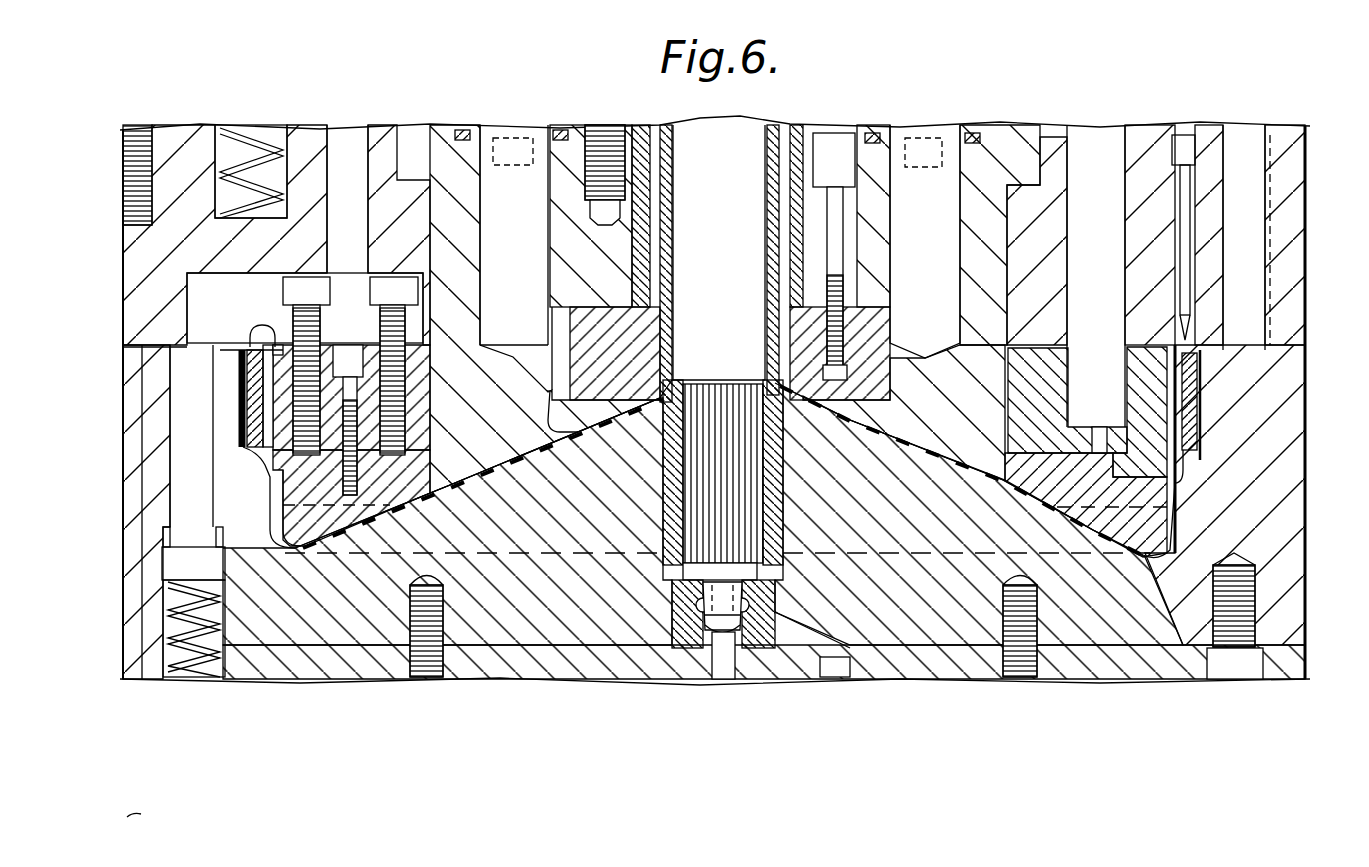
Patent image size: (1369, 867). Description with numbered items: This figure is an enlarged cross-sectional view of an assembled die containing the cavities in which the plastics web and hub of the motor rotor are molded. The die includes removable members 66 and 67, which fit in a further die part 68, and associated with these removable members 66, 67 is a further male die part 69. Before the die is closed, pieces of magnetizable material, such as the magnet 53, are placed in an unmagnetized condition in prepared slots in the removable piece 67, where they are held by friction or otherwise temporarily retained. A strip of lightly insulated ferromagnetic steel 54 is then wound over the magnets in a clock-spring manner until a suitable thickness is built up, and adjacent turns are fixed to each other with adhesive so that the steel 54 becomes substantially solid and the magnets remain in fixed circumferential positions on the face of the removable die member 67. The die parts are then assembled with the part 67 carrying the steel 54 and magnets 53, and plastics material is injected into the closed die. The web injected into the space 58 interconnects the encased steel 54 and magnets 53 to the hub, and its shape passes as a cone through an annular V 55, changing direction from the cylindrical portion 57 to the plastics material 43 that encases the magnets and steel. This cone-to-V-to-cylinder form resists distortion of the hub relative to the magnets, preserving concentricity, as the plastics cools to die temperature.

The plastics material 43 is at (240, 382).
The magnet 53 is at (238, 412).
The steel 54 is at (255, 438).
The annular V 55 is at (283, 550).
The cylindrical portion 57 is at (300, 470).
The space 58 is at (393, 507).
The removable die member 66 is at (300, 540).
The removable die member 67 is at (275, 492).
The further die part 68 is at (970, 397).
The male die part 69 is at (933, 623).